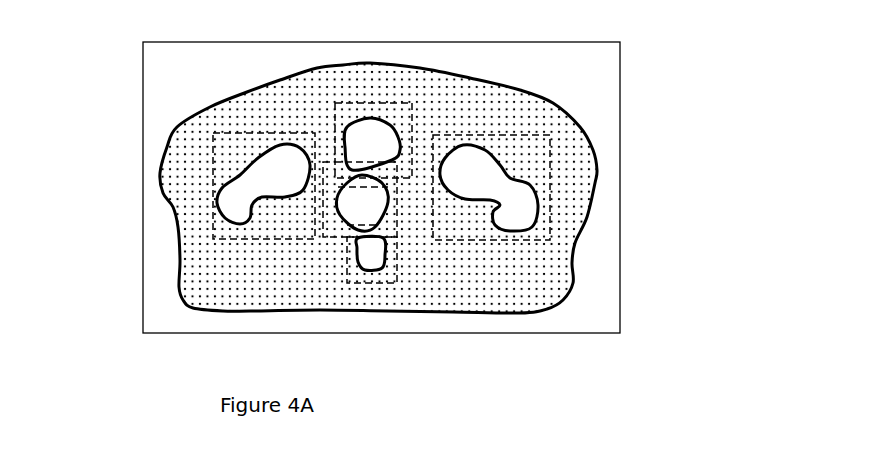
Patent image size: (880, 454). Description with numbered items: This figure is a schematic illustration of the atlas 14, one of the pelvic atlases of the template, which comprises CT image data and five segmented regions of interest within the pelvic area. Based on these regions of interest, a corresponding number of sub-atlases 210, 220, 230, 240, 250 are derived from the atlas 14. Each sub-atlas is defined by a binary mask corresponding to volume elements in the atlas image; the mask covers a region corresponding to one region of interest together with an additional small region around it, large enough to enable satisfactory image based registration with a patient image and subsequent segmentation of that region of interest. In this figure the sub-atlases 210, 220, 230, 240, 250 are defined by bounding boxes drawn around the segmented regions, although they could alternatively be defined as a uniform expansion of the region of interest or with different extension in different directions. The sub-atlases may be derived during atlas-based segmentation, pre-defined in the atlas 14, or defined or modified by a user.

The atlas 14 is at (620, 313).
The sub-atlas 210 is at (227, 152).
The sub-atlas 220 is at (397, 117).
The sub-atlas 230 is at (355, 272).
The sub-atlas 240 is at (333, 232).
The sub-atlas 250 is at (515, 165).